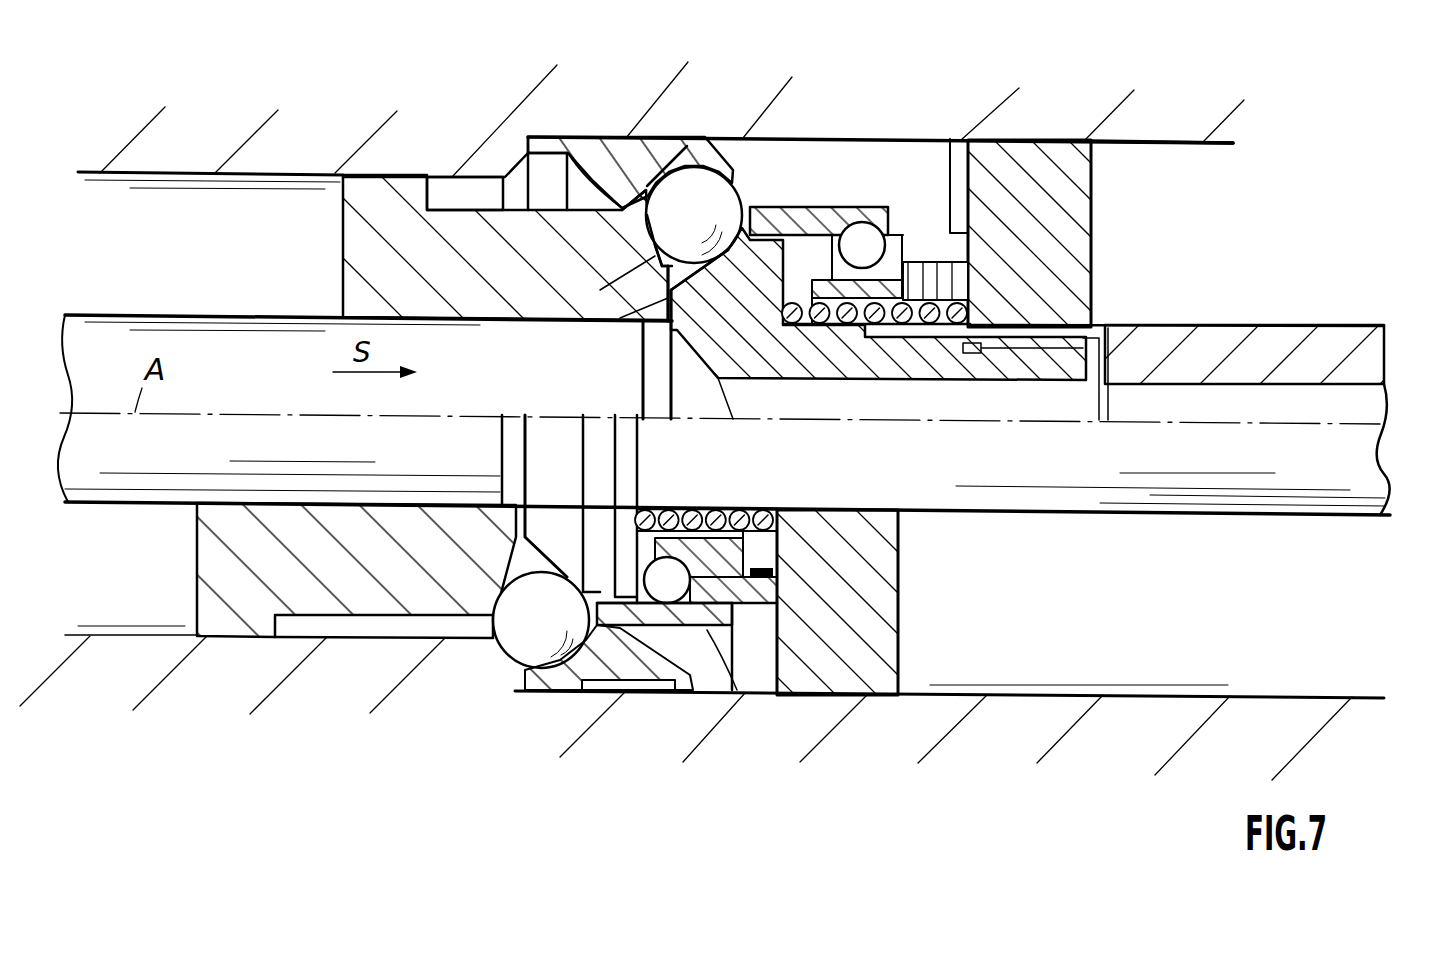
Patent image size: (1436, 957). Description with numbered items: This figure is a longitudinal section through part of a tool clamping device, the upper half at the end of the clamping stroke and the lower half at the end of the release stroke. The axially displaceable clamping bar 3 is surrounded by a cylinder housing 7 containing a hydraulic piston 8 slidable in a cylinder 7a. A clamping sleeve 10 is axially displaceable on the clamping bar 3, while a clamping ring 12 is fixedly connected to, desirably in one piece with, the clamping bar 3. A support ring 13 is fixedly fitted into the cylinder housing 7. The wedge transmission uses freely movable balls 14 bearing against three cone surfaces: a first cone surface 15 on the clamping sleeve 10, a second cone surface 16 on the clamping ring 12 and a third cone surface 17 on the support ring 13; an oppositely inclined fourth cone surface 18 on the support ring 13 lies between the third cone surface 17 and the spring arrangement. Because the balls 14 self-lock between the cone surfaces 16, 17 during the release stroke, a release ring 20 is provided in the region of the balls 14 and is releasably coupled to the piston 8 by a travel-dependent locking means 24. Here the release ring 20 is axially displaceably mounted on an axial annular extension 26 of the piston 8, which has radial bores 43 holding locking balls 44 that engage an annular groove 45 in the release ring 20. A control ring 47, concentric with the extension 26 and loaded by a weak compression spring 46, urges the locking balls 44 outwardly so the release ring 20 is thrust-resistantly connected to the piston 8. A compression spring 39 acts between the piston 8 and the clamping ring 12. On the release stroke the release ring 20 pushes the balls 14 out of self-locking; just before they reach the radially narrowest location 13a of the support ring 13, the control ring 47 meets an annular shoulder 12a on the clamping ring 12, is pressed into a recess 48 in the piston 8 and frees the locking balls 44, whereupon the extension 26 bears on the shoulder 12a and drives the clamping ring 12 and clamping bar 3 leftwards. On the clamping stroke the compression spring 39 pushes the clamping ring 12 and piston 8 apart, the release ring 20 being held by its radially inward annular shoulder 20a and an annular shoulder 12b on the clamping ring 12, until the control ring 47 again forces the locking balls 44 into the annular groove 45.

The clamping bar 3 is at (138, 330).
The cylinder housing 7 is at (372, 130).
The cylinder 7a is at (1181, 146).
The piston 8 is at (1082, 228).
The clamping sleeve 10 is at (492, 300).
The clamping ring 12 is at (757, 277).
The annular shoulder 12a is at (864, 185).
The annular shoulder 12b is at (668, 620).
The support ring 13 is at (634, 126).
The narrowest location 13a is at (597, 153).
The balls 14 is at (716, 142).
The first cone surface 15 is at (650, 287).
The second cone surface 16 is at (663, 300).
The third cone surface 17 is at (713, 183).
The fourth cone surface 18 is at (553, 205).
The release ring 20 is at (752, 248).
The annular shoulder 20a is at (608, 655).
The locking means 24 is at (860, 222).
The axial annular extension 26 is at (952, 228).
The compression spring 39 is at (714, 512).
The radial bores 43 is at (910, 262).
The locking balls 44 is at (888, 230).
The annular groove 45 is at (712, 632).
The compression spring 46 is at (933, 323).
The control ring 47 is at (857, 325).
The recess 48 is at (1008, 348).